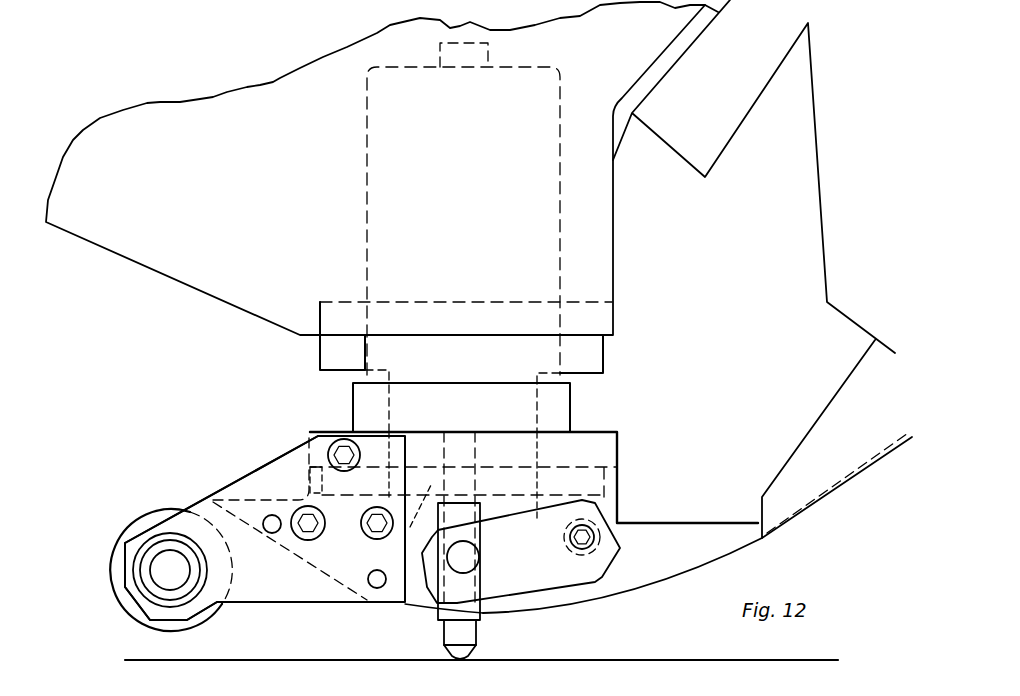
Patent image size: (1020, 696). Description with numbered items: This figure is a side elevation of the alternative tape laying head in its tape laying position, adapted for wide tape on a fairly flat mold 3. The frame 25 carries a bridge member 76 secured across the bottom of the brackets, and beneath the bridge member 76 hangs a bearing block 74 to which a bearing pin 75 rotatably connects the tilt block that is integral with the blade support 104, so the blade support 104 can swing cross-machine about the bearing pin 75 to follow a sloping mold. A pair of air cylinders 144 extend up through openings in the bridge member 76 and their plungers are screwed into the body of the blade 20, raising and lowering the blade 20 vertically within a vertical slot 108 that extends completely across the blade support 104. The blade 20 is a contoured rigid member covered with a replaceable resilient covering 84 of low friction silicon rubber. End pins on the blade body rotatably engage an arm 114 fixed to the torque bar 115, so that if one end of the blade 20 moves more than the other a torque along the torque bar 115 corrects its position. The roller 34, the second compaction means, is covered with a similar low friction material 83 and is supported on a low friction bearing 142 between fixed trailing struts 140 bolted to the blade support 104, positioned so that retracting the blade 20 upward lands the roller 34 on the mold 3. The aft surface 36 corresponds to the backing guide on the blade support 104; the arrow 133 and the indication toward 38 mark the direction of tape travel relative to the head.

The frame 25 is at (258, 178).
The air cylinders 144 is at (485, 205).
The bridge member 76 is at (597, 315).
The bearing block 74 is at (603, 358).
The bearing pin 75 is at (618, 471).
The trailing struts 140 is at (297, 445).
The pivot axis edge 133 is at (226, 476).
The aft surface 36 is at (307, 572).
The roller 34 is at (143, 520).
The low friction bearing 142 is at (137, 583).
The roller covering 83 is at (213, 607).
The direction to element 38 is at (205, 500).
The blade 20 is at (478, 650).
The resilient covering 84 is at (440, 650).
The vertical slot 108 is at (483, 607).
The arm 114 is at (618, 520).
The torque bar 115 is at (600, 524).
The blade support 104 is at (693, 558).
The mold 3 is at (308, 660).